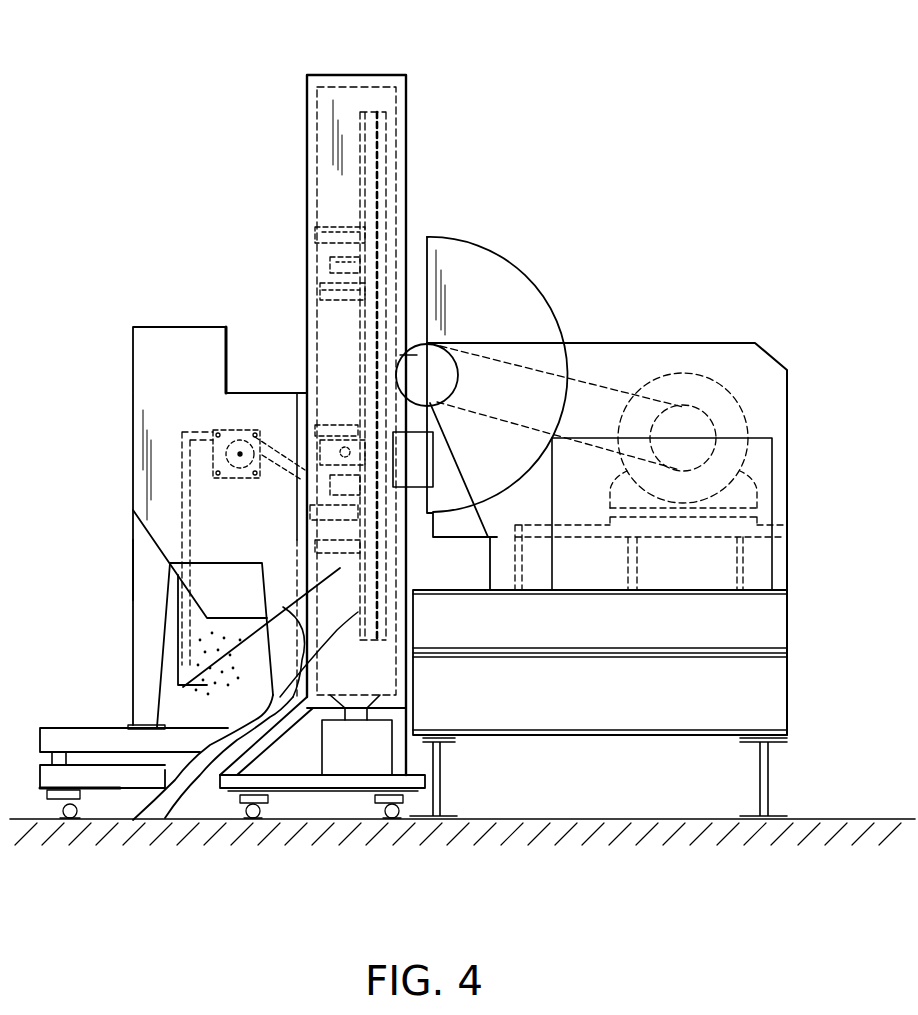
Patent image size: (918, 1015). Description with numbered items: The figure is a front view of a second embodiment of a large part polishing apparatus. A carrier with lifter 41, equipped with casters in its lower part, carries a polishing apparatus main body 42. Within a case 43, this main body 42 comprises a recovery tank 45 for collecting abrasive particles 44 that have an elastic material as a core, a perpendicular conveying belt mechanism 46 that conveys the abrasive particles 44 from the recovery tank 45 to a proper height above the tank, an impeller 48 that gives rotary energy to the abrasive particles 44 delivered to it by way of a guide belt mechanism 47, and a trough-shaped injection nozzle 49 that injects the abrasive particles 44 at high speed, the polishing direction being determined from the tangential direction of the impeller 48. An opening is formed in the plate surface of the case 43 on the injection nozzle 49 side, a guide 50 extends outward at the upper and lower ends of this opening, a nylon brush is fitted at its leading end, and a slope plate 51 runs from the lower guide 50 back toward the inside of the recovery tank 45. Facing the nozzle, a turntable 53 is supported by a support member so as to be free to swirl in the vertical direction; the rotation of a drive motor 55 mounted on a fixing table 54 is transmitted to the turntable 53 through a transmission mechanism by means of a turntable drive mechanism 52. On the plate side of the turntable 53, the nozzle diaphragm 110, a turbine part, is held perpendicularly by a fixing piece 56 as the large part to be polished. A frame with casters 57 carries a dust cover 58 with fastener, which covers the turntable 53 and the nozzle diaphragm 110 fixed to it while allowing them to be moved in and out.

The carrier with lifter 41 is at (118, 772).
The polishing apparatus main body 42 is at (148, 503).
The case 43 is at (133, 568).
The abrasive particles 44 is at (187, 672).
The recovery tank 45 is at (228, 633).
The perpendicular conveying belt mechanism 46 is at (180, 627).
The guide belt mechanism 47 is at (213, 430).
The impeller 48 is at (225, 448).
The injection nozzle 49 is at (300, 463).
The guide 50 is at (357, 421).
The slope plate 51 is at (325, 652).
The turntable drive mechanism 52 is at (693, 362).
The turntable 53 is at (371, 153).
The fixing table 54 is at (768, 620).
The drive motor 55 is at (748, 416).
The fixing piece 56 is at (313, 232).
The frame with casters 57 is at (412, 822).
The dust cover 58 is at (355, 98).
The nozzle diaphragm 110 is at (318, 256).